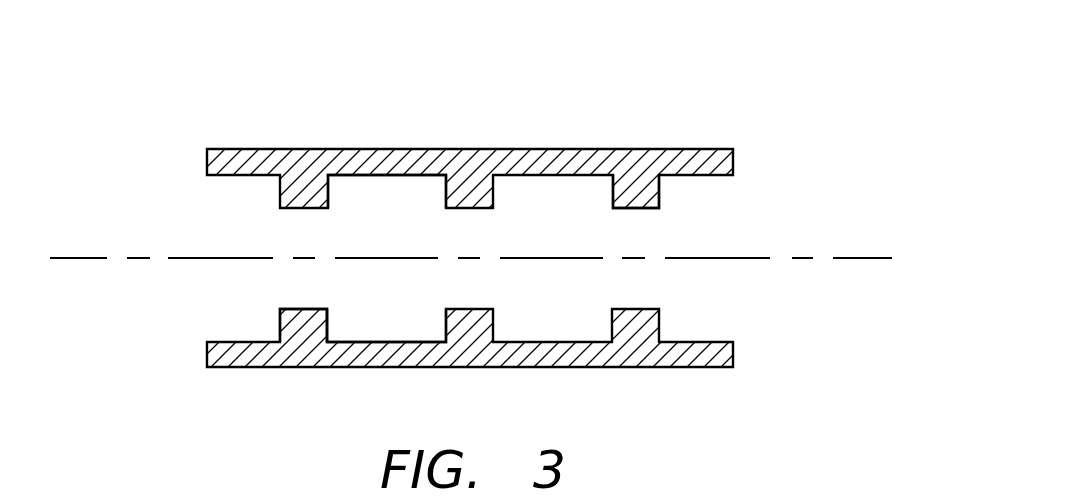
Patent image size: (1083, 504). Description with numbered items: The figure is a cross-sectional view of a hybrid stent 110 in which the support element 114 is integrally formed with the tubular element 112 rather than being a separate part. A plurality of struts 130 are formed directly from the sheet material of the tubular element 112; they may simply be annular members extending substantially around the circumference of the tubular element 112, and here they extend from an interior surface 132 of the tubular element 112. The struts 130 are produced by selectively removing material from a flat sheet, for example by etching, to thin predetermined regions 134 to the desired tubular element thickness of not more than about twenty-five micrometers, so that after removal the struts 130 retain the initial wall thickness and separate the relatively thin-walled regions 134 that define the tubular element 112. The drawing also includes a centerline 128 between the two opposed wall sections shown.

The hybrid stent 110 is at (183, 155).
The tubular element 112 is at (528, 148).
The support element 114 is at (327, 320).
The centerline / parting plane 128 is at (862, 257).
The struts 130 is at (280, 325).
The interior surface 132 is at (370, 177).
The thin-walled regions 134 is at (648, 163).